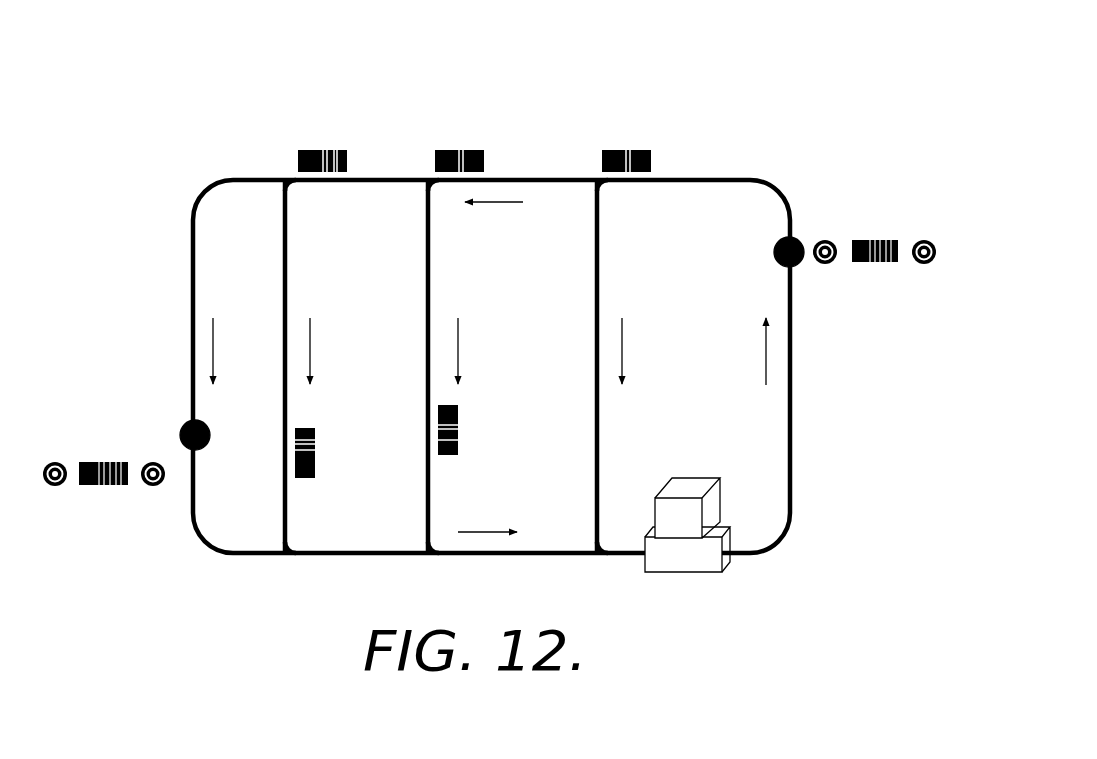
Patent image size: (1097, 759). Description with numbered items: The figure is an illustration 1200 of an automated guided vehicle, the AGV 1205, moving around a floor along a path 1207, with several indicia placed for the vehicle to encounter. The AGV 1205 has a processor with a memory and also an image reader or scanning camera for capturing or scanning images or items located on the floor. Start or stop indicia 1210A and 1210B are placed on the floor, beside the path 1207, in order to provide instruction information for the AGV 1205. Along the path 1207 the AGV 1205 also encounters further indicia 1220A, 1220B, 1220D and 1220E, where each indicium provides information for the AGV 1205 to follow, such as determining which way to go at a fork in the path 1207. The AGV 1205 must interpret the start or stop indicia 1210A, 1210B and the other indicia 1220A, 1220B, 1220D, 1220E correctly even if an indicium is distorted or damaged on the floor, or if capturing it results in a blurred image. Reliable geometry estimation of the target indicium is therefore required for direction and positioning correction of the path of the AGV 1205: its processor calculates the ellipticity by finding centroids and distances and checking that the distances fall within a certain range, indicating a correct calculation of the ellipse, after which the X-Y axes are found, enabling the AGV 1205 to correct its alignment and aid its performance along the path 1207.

The illustration 1200 is at (758, 85).
The AGV 1205 is at (698, 573).
The path 1207 is at (791, 440).
The start or stop indicium 1210A is at (950, 182).
The start or stop indicium 1210B is at (80, 514).
The indicium 1220A is at (627, 150).
The indicium 1220B is at (323, 150).
The indicium 1220D is at (316, 451).
The indicium 1220E is at (459, 428).